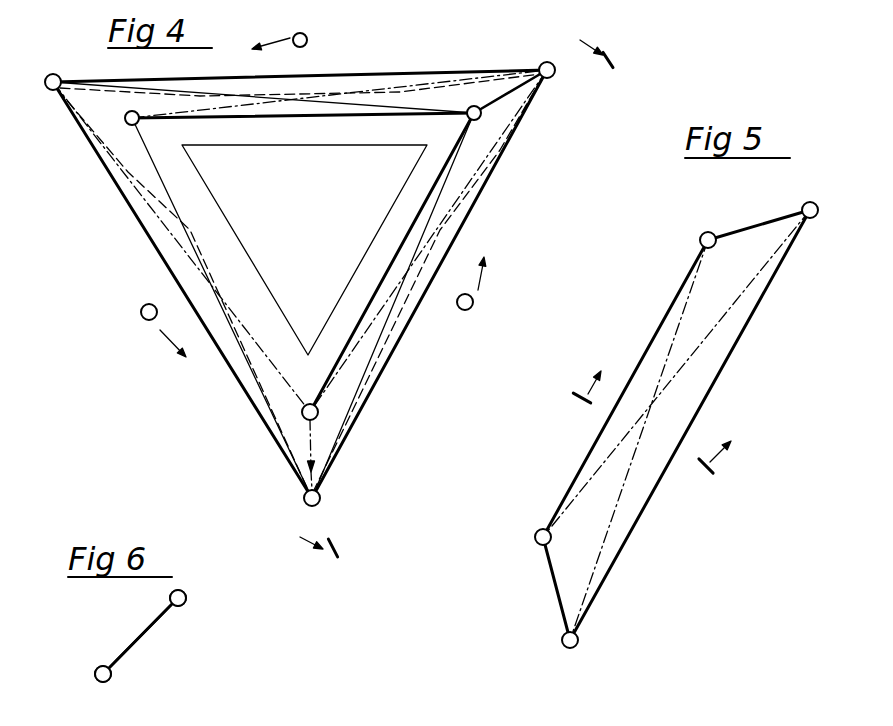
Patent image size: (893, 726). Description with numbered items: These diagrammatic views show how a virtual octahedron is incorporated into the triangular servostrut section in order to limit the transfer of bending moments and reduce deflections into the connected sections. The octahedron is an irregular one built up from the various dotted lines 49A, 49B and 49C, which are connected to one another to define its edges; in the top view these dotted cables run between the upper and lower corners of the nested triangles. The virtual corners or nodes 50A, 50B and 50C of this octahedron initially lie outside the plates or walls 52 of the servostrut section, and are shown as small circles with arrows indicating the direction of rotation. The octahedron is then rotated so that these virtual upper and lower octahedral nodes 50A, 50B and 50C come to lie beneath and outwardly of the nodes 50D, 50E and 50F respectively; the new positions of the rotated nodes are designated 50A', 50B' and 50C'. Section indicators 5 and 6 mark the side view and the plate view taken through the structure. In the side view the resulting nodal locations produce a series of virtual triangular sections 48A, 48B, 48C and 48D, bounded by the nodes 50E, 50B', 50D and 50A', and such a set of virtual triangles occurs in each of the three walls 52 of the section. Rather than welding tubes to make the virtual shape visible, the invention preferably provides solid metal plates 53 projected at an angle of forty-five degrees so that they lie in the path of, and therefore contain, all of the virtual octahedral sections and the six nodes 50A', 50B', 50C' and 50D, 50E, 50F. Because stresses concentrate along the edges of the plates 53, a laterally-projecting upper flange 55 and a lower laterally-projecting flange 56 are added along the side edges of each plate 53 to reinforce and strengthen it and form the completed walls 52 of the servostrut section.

In FIG. 4, the virtual triangular section 48A is at (403, 250).
In FIG. 5, the virtual triangular section 48A is at (660, 347).
In FIG. 4, the virtual triangular section 48B is at (492, 117).
In FIG. 5, the virtual triangular section 48B is at (752, 237).
In FIG. 4, the virtual triangular section 48C is at (412, 312).
In FIG. 5, the virtual triangular section 48C is at (707, 373).
In FIG. 4, the virtual triangular section 48D is at (345, 390).
In FIG. 5, the virtual triangular section 48D is at (567, 573).
In FIG. 4, the dotted line 49A is at (487, 147).
In FIG. 4, the dotted line 49B is at (455, 90).
In FIG. 4, the dotted line 49C is at (115, 178).
In FIG. 4, the virtual octahedral node 50A is at (143, 318).
In FIG. 4, the virtual octahedral node 50B is at (497, 284).
In FIG. 4, the virtual octahedral node 50C is at (305, 39).
In FIG. 4, the rotated node location 50A' is at (340, 502).
In FIG. 5, the rotated node location 50A' is at (602, 639).
In FIG. 4, the rotated node location 50B' is at (573, 81).
In FIG. 5, the rotated node location 50B' is at (835, 197).
In FIG. 4, the rotated node location 50C' is at (57, 63).
In FIG. 4, the octahedral node 50D is at (306, 402).
In FIG. 5, the octahedral node 50D is at (536, 531).
In FIG. 4, the octahedral node 50E is at (466, 118).
In FIG. 5, the octahedral node 50E is at (703, 233).
In FIG. 4, the octahedral node 50F is at (143, 125).
In FIG. 4, the section line 5- 5 is at (449, 287).
In FIG. 5, the section line 6- 6 is at (660, 408).
In FIG. 6, the wall 52 is at (118, 620).
In FIG. 6, the solid metal plate 53 is at (147, 630).
In FIG. 6, the upper flange 55 is at (189, 598).
In FIG. 6, the lower flange 56 is at (120, 677).